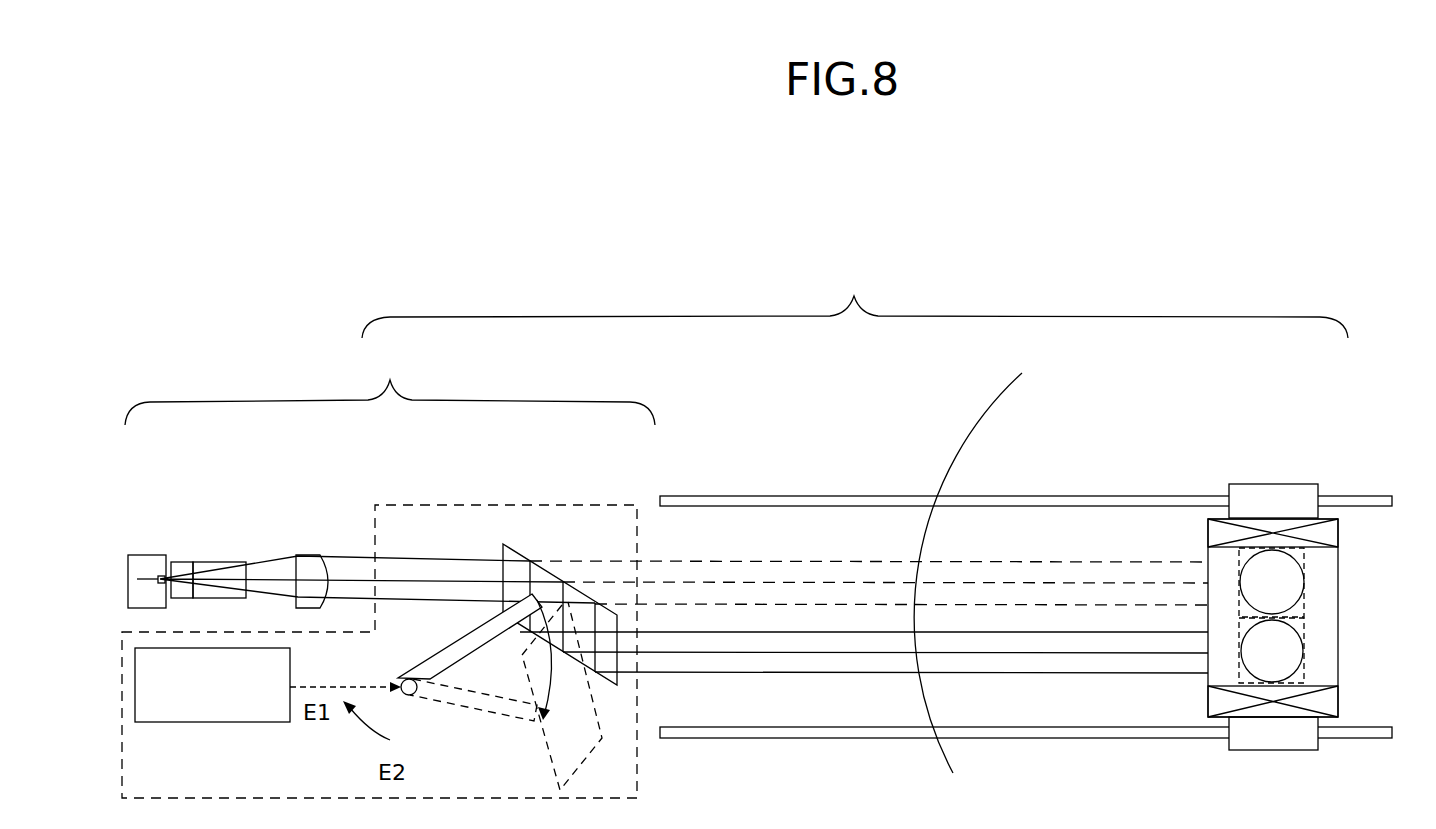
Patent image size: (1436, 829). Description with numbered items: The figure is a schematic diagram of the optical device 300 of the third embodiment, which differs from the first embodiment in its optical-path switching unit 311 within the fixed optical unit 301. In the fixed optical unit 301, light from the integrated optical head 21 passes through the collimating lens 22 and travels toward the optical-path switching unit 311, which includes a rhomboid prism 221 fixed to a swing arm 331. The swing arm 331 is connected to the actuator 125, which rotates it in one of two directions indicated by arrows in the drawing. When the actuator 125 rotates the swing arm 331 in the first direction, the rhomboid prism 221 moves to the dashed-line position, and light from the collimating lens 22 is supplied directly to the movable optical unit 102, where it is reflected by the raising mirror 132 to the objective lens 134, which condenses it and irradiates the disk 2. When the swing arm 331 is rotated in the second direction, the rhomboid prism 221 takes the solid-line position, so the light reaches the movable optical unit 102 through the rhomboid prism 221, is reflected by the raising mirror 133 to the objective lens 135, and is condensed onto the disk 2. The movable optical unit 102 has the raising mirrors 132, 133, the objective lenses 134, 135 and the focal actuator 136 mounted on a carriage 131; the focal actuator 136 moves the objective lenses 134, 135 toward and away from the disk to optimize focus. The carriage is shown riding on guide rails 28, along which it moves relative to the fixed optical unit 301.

The disk 2 is at (962, 452).
The integrated optical head 21 is at (192, 555).
The collimating lens 22 is at (316, 555).
The guide rails 28 is at (767, 496).
The movable optical unit 102 is at (1275, 484).
The actuator 125 is at (200, 722).
The carriage 131 is at (1208, 530).
The raising mirror 132 is at (1304, 553).
The raising mirror 133 is at (1304, 625).
The objective lens 134 is at (1304, 600).
The objective lens 135 is at (1304, 673).
The focal actuator 136 is at (1338, 702).
The rhomboid prism 221 is at (503, 543).
The optical device 300 is at (855, 300).
The fixed optical unit 301 is at (390, 385).
The optical-path switching unit 311 is at (443, 503).
The swing arm 331 is at (492, 636).